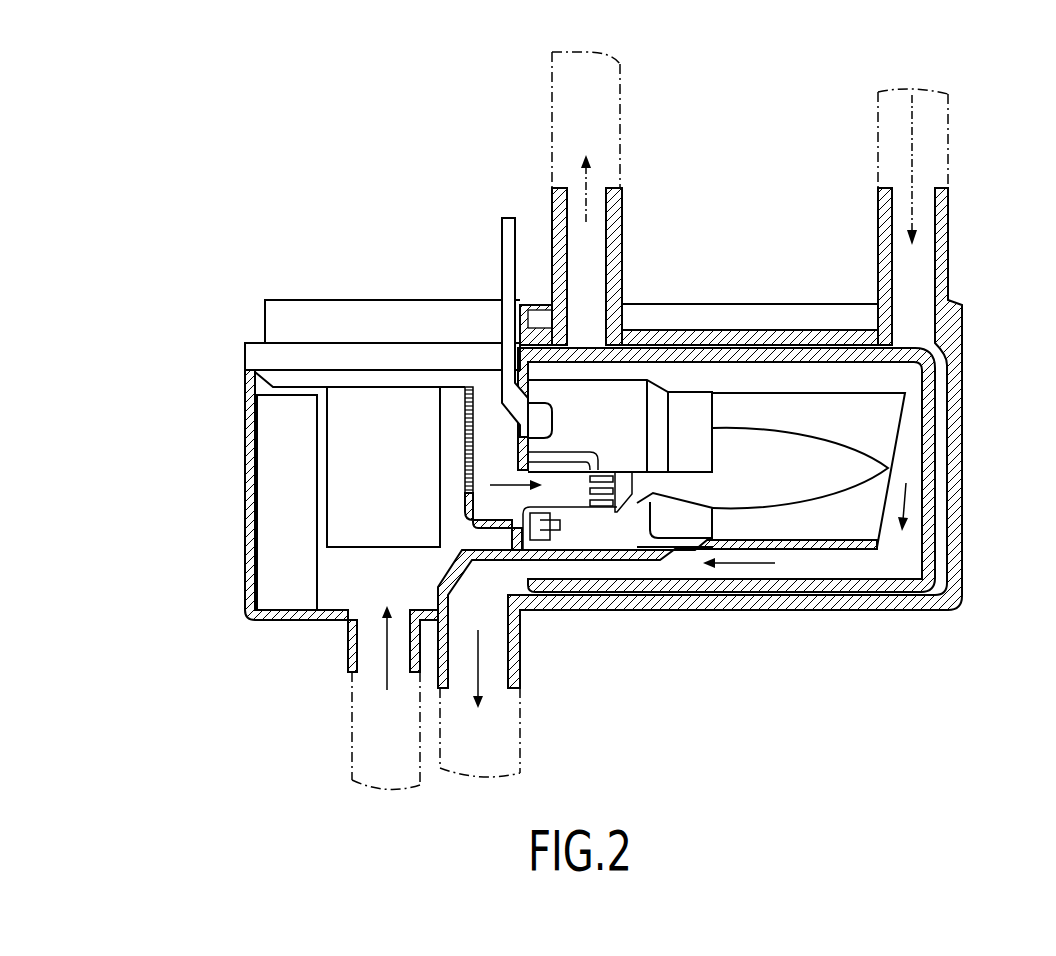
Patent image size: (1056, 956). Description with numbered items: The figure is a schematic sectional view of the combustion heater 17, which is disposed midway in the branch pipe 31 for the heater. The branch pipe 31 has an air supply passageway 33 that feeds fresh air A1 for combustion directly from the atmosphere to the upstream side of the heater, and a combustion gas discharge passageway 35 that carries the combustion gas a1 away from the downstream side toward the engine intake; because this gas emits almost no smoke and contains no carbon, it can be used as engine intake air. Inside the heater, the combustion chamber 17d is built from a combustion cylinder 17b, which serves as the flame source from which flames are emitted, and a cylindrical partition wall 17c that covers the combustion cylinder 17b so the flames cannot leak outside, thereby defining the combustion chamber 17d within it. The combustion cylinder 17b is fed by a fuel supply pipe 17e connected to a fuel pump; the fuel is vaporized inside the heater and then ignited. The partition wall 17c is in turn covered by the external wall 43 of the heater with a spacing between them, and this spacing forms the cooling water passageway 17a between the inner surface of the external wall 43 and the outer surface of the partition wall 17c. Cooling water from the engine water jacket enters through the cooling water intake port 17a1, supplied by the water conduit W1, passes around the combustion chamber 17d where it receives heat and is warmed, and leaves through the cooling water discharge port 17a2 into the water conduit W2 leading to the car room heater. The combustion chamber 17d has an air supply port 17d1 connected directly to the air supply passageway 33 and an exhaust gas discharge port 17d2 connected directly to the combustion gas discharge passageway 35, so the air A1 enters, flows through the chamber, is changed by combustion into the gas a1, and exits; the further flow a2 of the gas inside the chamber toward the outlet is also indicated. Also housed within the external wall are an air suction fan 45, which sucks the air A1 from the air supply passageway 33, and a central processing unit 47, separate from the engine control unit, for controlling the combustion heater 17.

The combustion heater 17 is at (752, 176).
The cooling water passageway 17a is at (765, 347).
The cooling water intake port 17a1 is at (950, 240).
The cooling water discharge port 17a2 is at (622, 215).
The combustion cylinder 17b is at (700, 412).
The cylindrical partition wall 17c is at (930, 465).
The combustion chamber 17d is at (866, 393).
The air supply port 17d1 is at (347, 632).
The exhaust gas discharge port 17d2 is at (520, 645).
The fuel supply pipe 17e is at (503, 232).
The external wall 43 is at (770, 605).
The air suction fan 45 is at (320, 303).
The central processing unit (CPU) 47 is at (253, 492).
The air supply passageway 33 is at (350, 733).
The branch pipe for heater 31 is at (317, 730).
The combustion gas discharge passageway 35 is at (520, 733).
The water conduit W1 is at (952, 152).
The water conduit W2 is at (552, 92).
The air for combustion A1 is at (357, 656).
The combustion gas a1 is at (500, 480).
The exhaust gas flow in chamber a2 is at (910, 497).